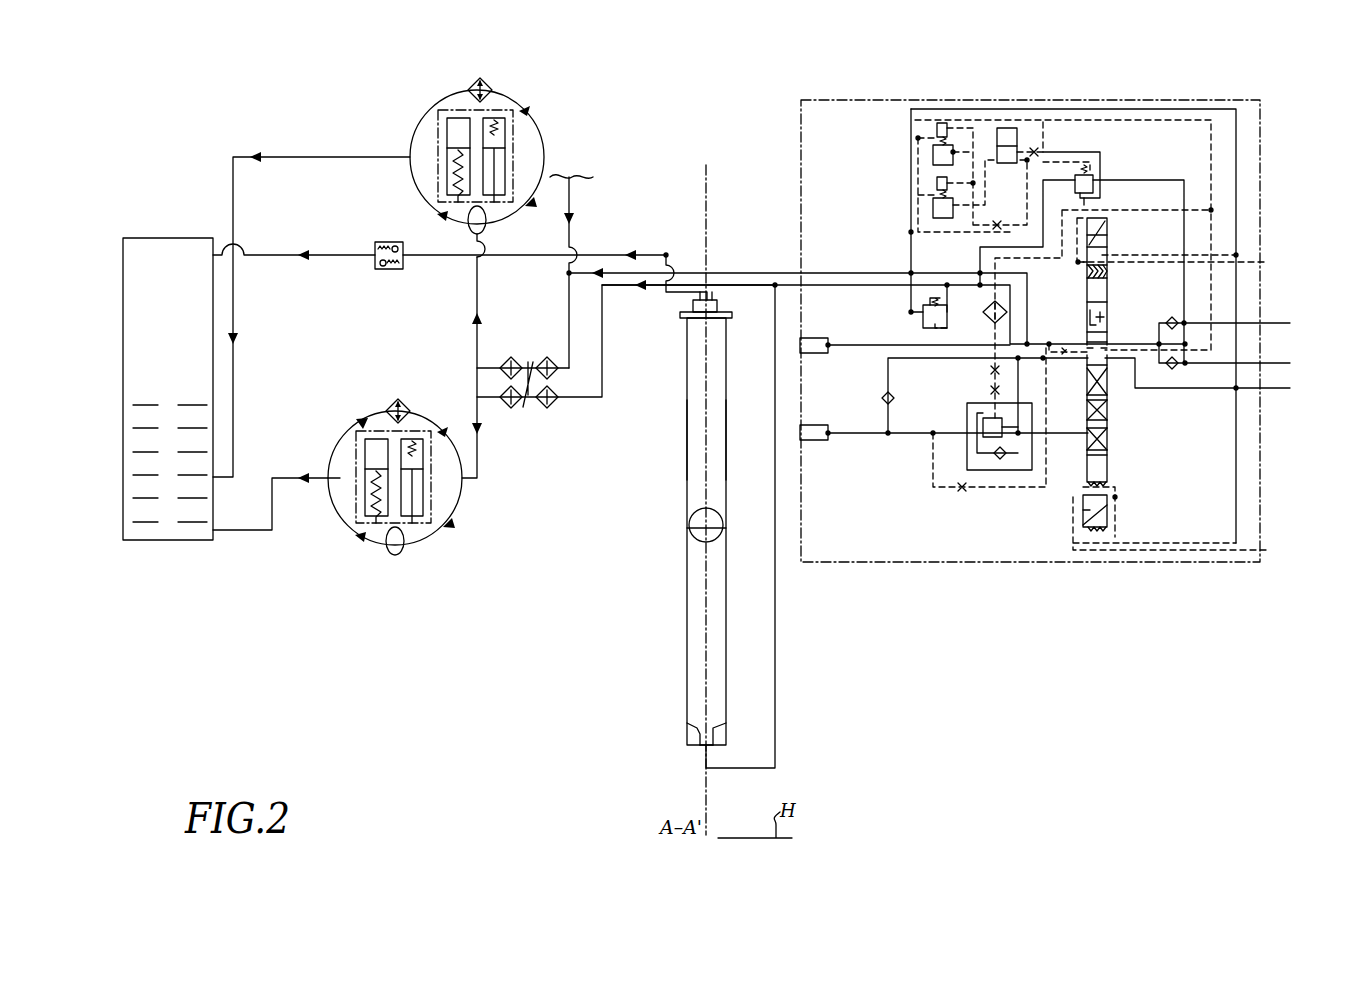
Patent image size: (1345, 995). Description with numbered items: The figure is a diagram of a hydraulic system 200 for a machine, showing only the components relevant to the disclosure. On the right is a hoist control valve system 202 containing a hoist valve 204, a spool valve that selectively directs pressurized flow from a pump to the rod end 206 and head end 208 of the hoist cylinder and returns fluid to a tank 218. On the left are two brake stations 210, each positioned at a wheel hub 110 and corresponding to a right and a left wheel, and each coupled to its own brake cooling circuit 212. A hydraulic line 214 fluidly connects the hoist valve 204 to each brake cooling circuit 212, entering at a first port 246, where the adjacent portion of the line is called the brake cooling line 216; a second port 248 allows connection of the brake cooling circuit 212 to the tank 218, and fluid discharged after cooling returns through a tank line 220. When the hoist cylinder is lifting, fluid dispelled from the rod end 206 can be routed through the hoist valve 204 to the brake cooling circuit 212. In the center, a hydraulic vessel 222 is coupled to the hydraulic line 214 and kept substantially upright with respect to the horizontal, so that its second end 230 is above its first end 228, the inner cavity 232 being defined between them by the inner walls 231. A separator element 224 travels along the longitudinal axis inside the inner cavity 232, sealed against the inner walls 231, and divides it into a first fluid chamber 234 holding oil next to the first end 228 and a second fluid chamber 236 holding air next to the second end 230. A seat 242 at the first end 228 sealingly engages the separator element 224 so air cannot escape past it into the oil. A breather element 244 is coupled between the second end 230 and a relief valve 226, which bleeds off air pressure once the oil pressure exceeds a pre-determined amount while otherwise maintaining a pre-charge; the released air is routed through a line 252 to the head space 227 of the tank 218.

The hydraulic system 200 is at (276, 92).
The hoist control valve system 202 is at (772, 124).
The hoist valve 204 is at (1110, 460).
The rod end 206 is at (1293, 351).
The head end 208 is at (1293, 311).
The brake station 210 is at (536, 142).
The brake cooling circuit 212 is at (495, 88).
The wheel hub 110 is at (488, 226).
The hydraulic line 214 is at (618, 288).
The brake cooling line 216 is at (480, 290).
The tank 218 is at (172, 548).
The tank line 220 is at (240, 345).
The hydraulic vessel 222 is at (687, 445).
The separator element 224 is at (697, 532).
The relief valve 226 is at (377, 268).
The head space 227 is at (183, 321).
The first end 228 is at (697, 748).
The second end 230 is at (684, 310).
The inner walls 231 is at (697, 490).
The inner cavity 232 is at (697, 388).
The first fluid chamber 234 is at (722, 633).
The second fluid chamber 236 is at (722, 431).
The seat 242 is at (697, 725).
The breather element 244 is at (728, 312).
The first port 246 is at (465, 482).
The second port 248 is at (318, 495).
The line 252 is at (266, 258).